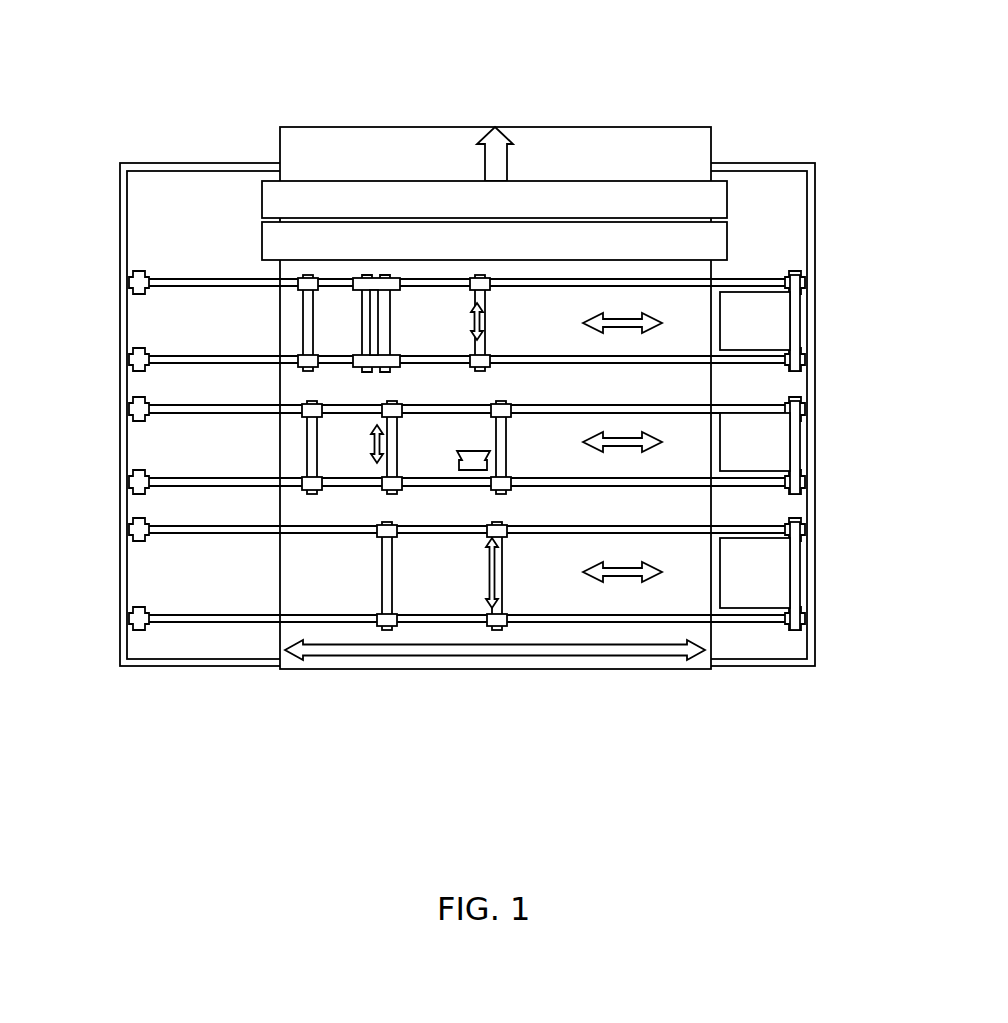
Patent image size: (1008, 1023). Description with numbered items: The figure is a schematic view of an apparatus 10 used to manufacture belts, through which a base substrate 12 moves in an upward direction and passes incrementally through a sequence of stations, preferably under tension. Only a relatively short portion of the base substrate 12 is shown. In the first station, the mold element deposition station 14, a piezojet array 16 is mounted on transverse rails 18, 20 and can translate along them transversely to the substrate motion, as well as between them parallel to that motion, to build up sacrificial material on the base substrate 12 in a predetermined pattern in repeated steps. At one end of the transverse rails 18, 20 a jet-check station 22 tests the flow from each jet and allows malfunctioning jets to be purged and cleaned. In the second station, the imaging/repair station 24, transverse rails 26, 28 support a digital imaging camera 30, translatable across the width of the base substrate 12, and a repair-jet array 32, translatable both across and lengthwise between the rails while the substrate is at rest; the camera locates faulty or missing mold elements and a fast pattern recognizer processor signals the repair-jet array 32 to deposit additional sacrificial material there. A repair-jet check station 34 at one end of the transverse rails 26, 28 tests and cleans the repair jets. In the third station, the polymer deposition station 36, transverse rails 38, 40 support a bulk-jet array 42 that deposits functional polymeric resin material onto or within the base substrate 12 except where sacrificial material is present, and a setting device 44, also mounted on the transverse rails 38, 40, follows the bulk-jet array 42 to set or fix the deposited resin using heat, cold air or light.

The apparatus 10 is at (736, 77).
The base substrate 12 is at (340, 670).
The mold element deposition station 14 is at (823, 520).
The piezojet array 16 is at (442, 577).
The transverse rail 18 is at (200, 620).
The transverse rail 20 is at (205, 530).
The jet-check station 22 is at (762, 578).
The imaging/repair station 24 is at (823, 395).
The transverse rail 26 is at (187, 483).
The transverse rail 28 is at (185, 407).
The digital imaging camera 30 is at (480, 462).
The repair-jet array 32 is at (335, 458).
The repair-jet check station 34 is at (762, 425).
The polymer deposition station 36 is at (823, 272).
The transverse rail 38 is at (187, 360).
The transverse rail 40 is at (218, 277).
The bulk-jet array 42 is at (317, 320).
The setting device 44 is at (693, 202).